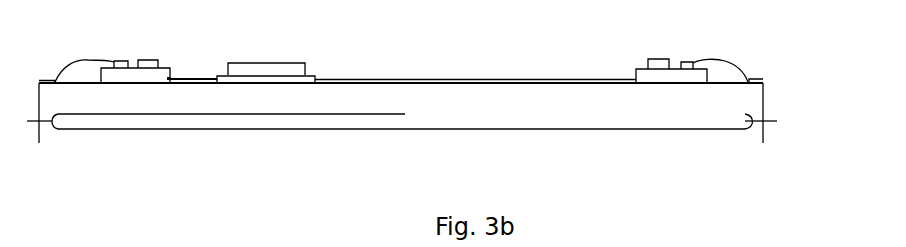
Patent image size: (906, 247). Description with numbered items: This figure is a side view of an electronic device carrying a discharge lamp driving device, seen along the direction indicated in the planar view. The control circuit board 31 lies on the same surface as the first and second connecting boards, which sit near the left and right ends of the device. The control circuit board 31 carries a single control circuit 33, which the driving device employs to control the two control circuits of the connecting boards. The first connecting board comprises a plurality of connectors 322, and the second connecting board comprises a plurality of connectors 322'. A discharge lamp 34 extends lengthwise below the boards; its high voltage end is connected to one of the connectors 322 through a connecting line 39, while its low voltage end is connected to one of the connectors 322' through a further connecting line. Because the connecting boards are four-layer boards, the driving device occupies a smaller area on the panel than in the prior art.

The connecting line 39 is at (87, 59).
The connectors 322 is at (150, 42).
The connectors 322' is at (713, 42).
The control circuit 33 is at (285, 63).
The control circuit board 31 is at (310, 70).
The discharge lamp 34 is at (416, 130).